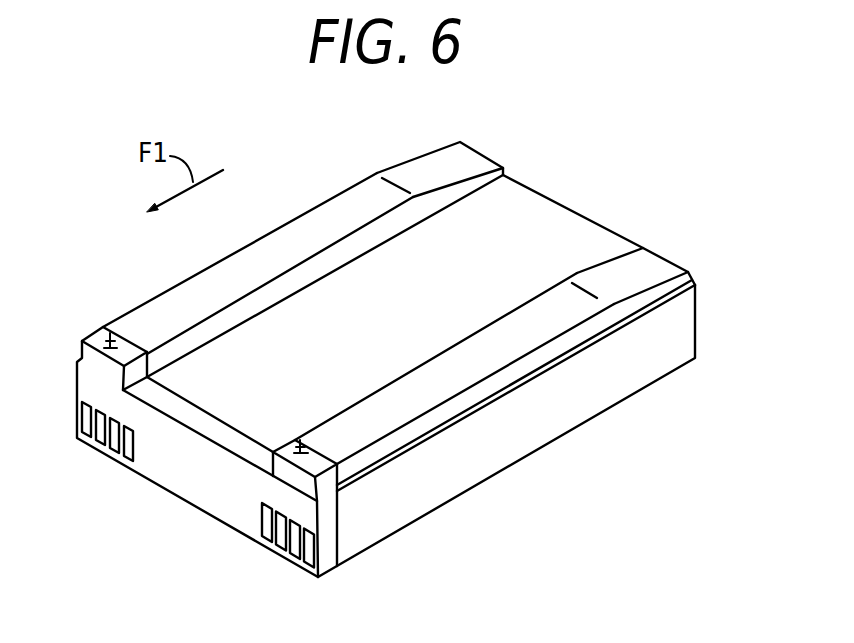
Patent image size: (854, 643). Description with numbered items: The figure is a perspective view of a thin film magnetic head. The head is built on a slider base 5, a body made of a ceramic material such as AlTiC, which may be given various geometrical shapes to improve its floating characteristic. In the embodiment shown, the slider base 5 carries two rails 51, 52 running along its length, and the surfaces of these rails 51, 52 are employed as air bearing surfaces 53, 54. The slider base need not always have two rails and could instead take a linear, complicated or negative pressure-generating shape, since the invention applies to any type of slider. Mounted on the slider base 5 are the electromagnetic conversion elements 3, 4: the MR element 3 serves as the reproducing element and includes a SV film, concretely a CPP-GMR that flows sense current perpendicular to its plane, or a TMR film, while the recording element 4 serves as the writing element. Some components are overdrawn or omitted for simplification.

The MR element 3 is at (110, 333).
The recording element 4 is at (105, 347).
The slider base 5 is at (555, 423).
The rail 51 is at (403, 162).
The rail 52 is at (582, 273).
The air bearing surface 53 is at (275, 252).
The air bearing surface 54 is at (423, 370).